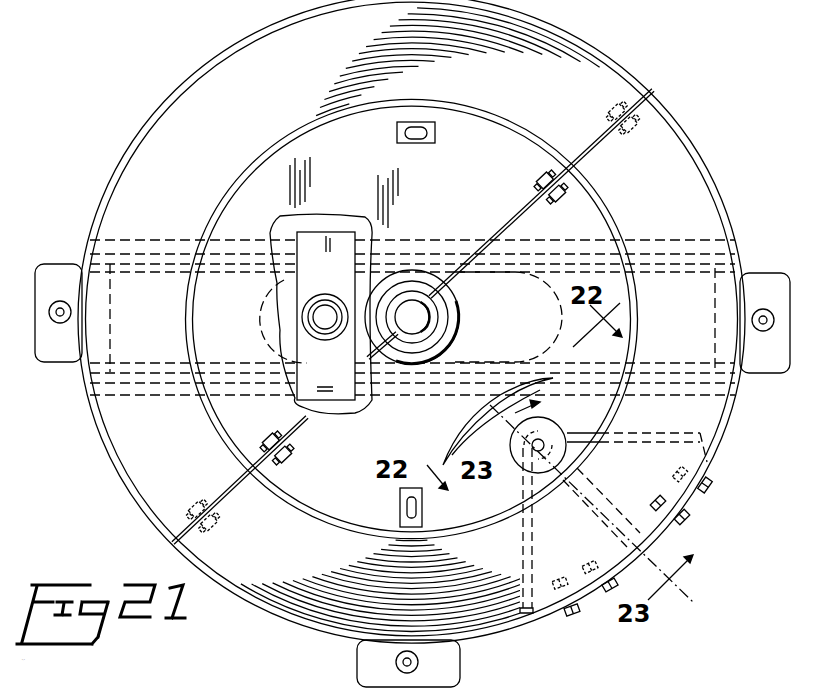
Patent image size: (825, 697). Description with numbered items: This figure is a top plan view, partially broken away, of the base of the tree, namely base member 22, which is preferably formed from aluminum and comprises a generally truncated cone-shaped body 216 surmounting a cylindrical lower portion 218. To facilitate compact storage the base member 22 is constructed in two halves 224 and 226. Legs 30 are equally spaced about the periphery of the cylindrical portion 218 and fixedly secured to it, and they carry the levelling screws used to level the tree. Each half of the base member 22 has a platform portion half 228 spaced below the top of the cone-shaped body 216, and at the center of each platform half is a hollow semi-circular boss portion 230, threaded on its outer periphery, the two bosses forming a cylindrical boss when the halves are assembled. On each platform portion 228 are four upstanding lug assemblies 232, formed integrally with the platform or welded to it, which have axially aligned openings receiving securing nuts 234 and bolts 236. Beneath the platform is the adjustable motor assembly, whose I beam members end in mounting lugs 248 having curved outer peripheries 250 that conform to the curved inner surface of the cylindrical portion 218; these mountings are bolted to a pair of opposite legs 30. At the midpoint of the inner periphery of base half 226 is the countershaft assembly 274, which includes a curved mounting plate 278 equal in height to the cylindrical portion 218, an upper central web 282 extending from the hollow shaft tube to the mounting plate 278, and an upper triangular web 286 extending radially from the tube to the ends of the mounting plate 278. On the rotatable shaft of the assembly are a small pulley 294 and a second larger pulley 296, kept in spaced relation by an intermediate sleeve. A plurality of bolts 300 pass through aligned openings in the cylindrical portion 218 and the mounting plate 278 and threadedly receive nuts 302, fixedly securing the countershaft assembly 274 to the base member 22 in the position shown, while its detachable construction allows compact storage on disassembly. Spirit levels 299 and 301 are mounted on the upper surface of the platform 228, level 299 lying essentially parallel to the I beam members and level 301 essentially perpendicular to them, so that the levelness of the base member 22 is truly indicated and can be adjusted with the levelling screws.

The half of base member 224 is at (163, 81).
The base member 22 is at (637, 63).
The platform portion half 228 is at (460, 201).
The upstanding lug assemblies 232 is at (262, 453).
The securing nuts 234 is at (265, 434).
The securing bolts 236 is at (291, 454).
The spirit level 299 is at (410, 143).
The legs 30 is at (50, 268).
The mounting lugs 248 is at (110, 323).
The curved outer peripheries 250 is at (82, 364).
The hollow semi-circular boss portion 230 is at (440, 322).
The countershaft assembly 274 is at (514, 496).
The small pulley 294 is at (557, 420).
The second larger pulley 296 is at (542, 418).
The upper triangular web 286 is at (625, 432).
The upper central web 282 is at (600, 492).
The curved mounting plate 278 is at (704, 474).
The nuts 302 is at (667, 469).
The bolts 300 is at (685, 520).
The spirit level 301 is at (400, 505).
The truncated cone-shaped body 216 is at (128, 452).
The half of base member 226 is at (246, 613).
The cylindrical lower portion 218 is at (495, 635).